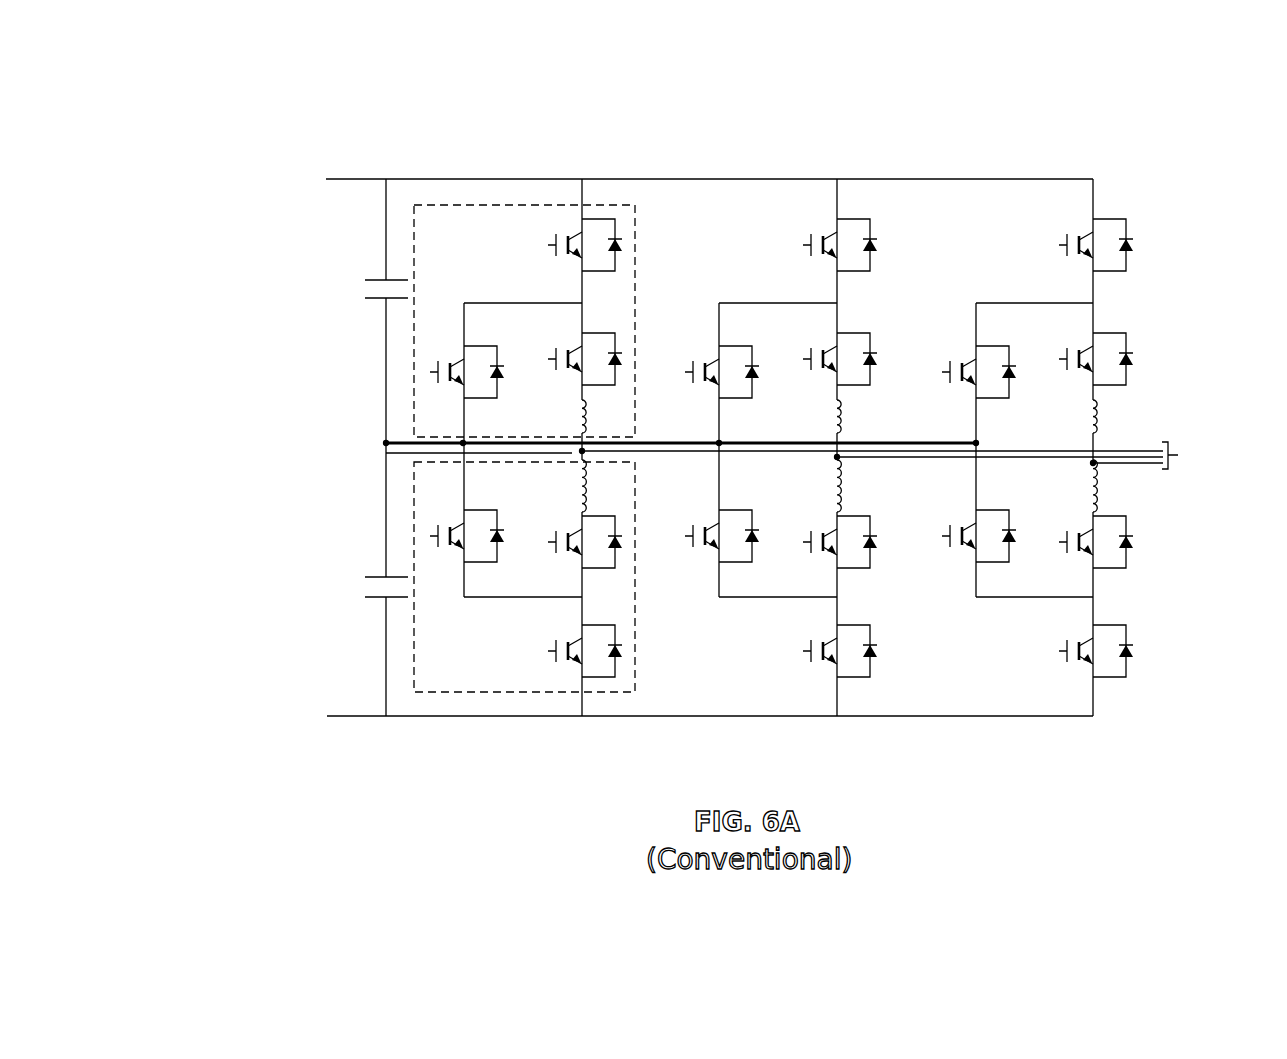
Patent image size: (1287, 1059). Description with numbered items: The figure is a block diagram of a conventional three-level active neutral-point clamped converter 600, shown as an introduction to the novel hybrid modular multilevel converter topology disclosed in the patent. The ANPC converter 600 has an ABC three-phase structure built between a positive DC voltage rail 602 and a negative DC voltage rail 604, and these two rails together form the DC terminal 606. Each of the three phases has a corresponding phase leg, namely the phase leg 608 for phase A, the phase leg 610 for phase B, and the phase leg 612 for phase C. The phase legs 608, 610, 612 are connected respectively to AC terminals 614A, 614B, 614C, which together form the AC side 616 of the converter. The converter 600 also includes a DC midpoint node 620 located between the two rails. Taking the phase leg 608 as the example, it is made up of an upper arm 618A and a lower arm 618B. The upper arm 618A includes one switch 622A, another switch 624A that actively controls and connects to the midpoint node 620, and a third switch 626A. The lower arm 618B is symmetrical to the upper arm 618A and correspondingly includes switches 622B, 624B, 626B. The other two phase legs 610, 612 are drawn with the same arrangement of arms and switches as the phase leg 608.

The active neutral-point clamped converter 600 is at (729, 69).
The positive DC voltage rail 602 is at (326, 178).
The negative DC voltage rail 604 is at (327, 721).
The DC terminal 606 is at (281, 447).
The phase leg 608 is at (581, 720).
The phase leg 610 is at (838, 720).
The phase leg 612 is at (1096, 720).
The AC terminal 614A is at (383, 453).
The AC terminal 614B is at (833, 459).
The AC terminal 614C is at (1085, 465).
The AC side 616 is at (1212, 455).
The upper arm 618A is at (509, 196).
The lower arm 618B is at (486, 700).
The DC midpoint node 620 is at (373, 443).
The switch 622A is at (624, 226).
The switch 622B is at (626, 666).
The switch 624A is at (407, 372).
The switch 624B is at (407, 536).
The third switch 626A is at (594, 323).
The switch 626B is at (613, 573).